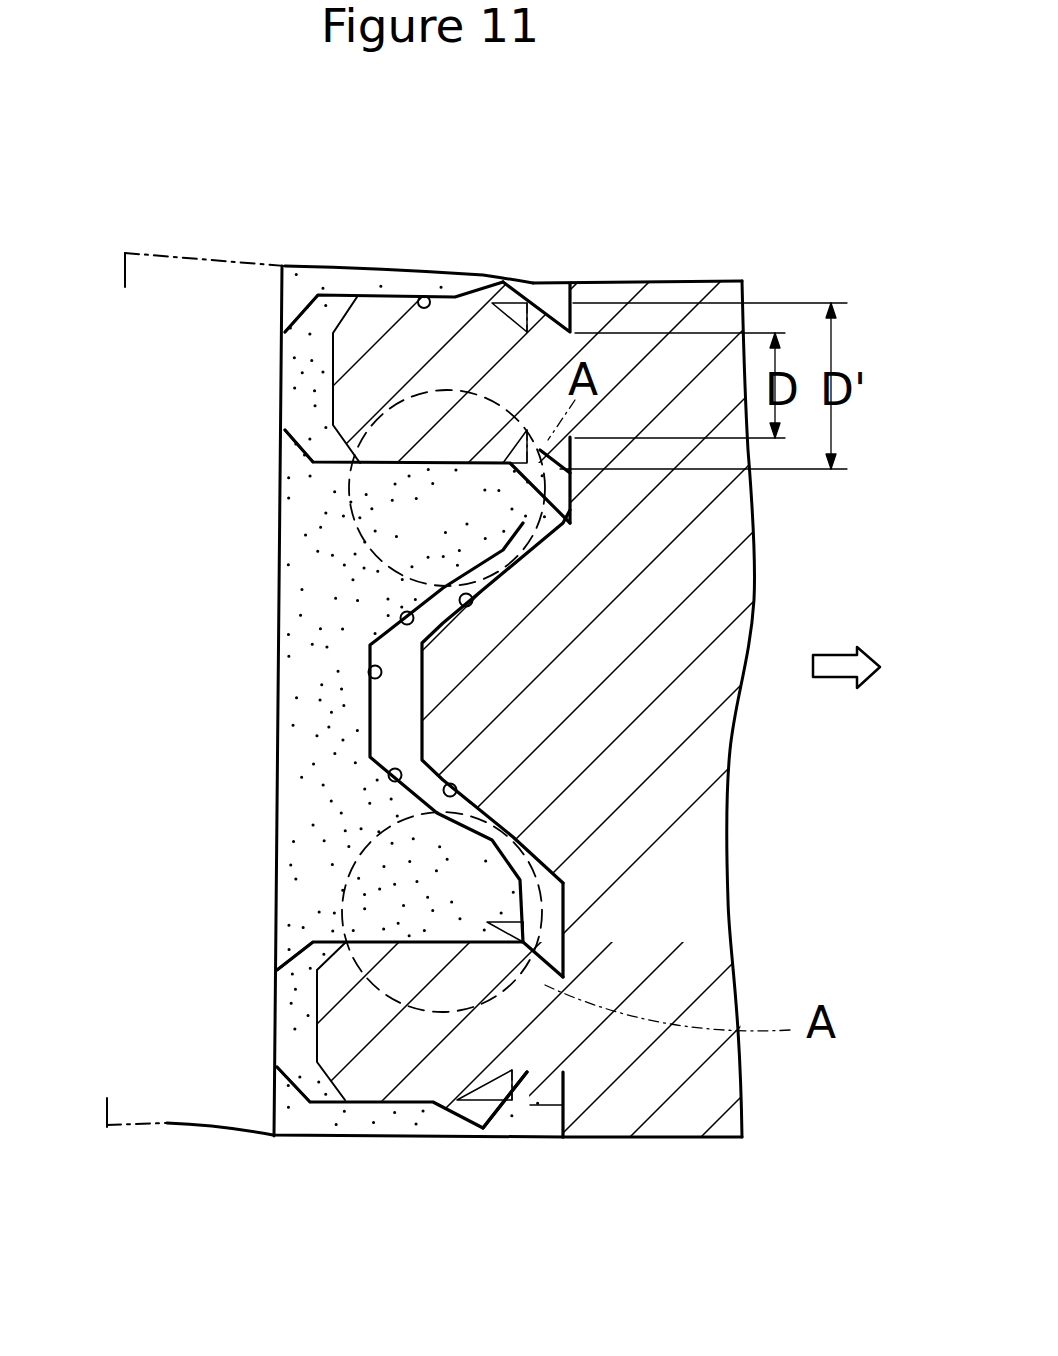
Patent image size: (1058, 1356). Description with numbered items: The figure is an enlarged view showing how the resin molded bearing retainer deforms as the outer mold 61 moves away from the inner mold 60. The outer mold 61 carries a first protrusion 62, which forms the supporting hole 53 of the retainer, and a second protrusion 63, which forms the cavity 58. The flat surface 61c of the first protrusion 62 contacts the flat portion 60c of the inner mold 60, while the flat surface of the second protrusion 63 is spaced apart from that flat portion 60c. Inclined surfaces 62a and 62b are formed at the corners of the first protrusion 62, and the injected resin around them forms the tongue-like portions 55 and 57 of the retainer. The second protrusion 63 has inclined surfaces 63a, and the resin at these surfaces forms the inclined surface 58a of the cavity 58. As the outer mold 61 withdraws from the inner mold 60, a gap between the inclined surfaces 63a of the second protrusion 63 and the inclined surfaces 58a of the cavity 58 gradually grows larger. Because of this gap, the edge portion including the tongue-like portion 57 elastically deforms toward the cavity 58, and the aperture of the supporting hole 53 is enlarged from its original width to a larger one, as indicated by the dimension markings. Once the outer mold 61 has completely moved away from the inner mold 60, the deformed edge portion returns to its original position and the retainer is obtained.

The supporting hole 53 is at (433, 297).
The tongue-like portion 55 is at (282, 318).
The tongue-like portion 57 is at (567, 523).
The cavity 58 is at (367, 680).
The inclined surface 58a is at (400, 615).
The inner mold 60 is at (200, 1128).
The flat portion 60c is at (283, 1137).
The outer mold 61 is at (718, 1085).
The flat surface 61c is at (330, 407).
The first protrusion 62 is at (327, 375).
The inclined surface 62a is at (343, 297).
The inclined surface 62b is at (565, 297).
The second protrusion 63 is at (427, 695).
The inclined surface 63a is at (457, 765).